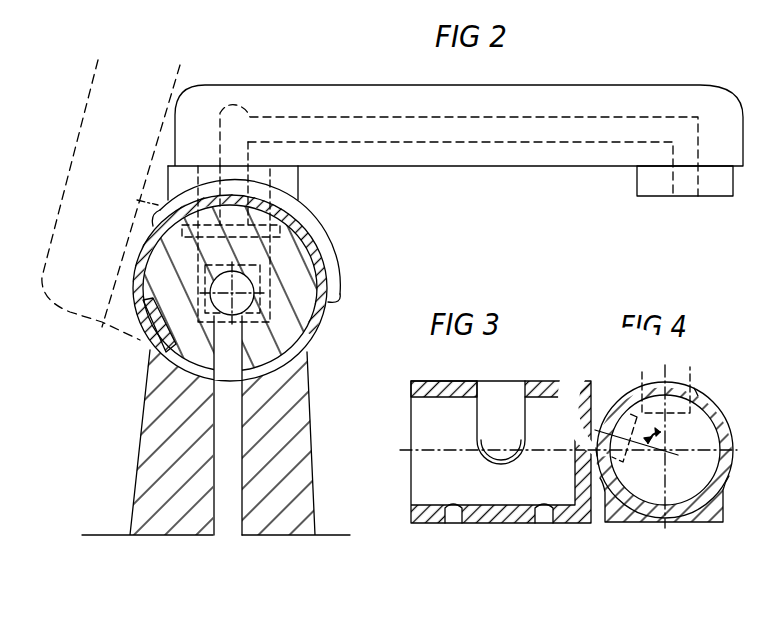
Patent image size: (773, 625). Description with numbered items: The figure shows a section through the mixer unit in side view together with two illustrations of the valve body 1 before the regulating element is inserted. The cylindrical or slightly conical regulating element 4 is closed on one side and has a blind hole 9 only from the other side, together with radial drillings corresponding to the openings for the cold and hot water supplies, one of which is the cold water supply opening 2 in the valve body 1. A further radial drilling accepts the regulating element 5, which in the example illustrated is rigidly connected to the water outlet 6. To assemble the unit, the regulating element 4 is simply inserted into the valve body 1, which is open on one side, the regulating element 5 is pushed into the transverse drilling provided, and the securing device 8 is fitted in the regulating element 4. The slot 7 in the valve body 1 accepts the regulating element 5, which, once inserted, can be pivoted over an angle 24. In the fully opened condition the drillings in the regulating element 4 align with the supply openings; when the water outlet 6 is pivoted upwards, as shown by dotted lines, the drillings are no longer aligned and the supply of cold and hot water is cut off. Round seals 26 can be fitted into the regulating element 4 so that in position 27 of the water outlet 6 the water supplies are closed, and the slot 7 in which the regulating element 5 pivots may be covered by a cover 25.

In FIG. 2, the valve body 1 is at (287, 413).
In FIG. 3, the valve body 1 is at (423, 525).
In FIG. 4, the valve body 1 is at (632, 525).
In FIG. 2, the cold water supply opening 2 is at (228, 527).
In FIG. 2, the regulating element 4 is at (287, 340).
In FIG. 4, the regulating element 5 is at (605, 410).
In FIG. 2, the water outlet 6 is at (513, 152).
In FIG. 3, the slot 7 is at (502, 420).
In FIG. 4, the slot 7 is at (633, 398).
In FIG. 2, the securing device 8 is at (187, 238).
In FIG. 2, the blind hole 9 is at (254, 293).
In FIG. 4, the angle 24 is at (668, 438).
In FIG. 2, the cover 25 is at (298, 213).
In FIG. 2, the round seals 26 is at (147, 347).
In FIG. 2, the position 27 is at (102, 167).